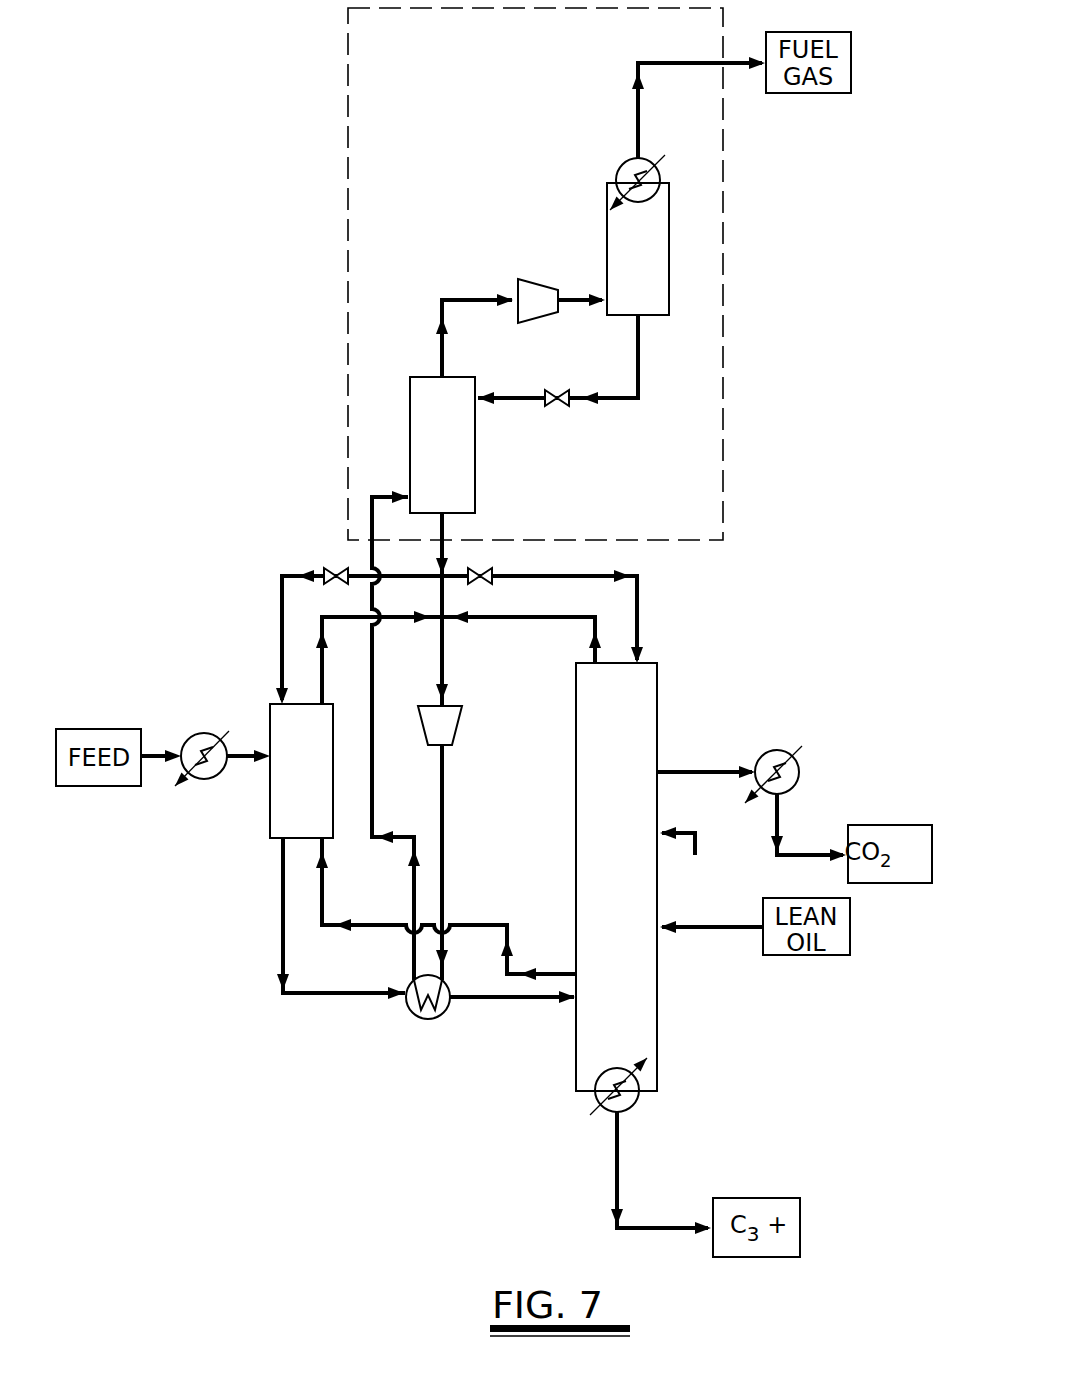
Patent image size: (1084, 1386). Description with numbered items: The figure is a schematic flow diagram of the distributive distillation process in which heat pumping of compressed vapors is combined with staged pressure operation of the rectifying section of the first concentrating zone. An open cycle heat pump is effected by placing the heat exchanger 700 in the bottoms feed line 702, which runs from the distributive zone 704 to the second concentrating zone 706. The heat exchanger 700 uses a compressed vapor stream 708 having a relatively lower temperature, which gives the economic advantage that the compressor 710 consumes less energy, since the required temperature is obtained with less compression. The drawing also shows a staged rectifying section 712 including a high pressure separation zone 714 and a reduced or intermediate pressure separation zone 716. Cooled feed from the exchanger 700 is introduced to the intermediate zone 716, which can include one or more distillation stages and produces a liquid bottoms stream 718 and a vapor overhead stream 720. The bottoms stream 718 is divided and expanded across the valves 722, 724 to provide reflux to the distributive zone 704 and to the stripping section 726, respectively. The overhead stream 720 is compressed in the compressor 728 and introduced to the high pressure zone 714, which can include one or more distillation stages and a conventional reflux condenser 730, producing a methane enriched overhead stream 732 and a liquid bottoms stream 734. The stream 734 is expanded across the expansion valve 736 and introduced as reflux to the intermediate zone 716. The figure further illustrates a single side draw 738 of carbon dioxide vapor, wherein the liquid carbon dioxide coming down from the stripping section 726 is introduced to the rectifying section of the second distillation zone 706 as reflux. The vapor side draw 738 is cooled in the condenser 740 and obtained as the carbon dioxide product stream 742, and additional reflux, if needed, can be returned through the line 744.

The heat exchanger 700 is at (407, 1007).
The bottoms feed line 702 is at (312, 995).
The distributive zone 704 is at (286, 727).
The second concentrating zone 706 is at (623, 998).
The compressed vapor stream 708 is at (443, 812).
The compressor 710 is at (443, 722).
The staged rectifying section 712 is at (348, 378).
The high pressure separation zone 714 is at (665, 247).
The intermediate pressure separation zone 716 is at (457, 468).
The liquid bottoms stream 718 is at (445, 530).
The vapor overhead stream 720 is at (468, 298).
The valve 722 is at (336, 568).
The valve 724 is at (490, 582).
The stripping section 726 is at (634, 712).
The compressor 728 is at (543, 282).
The reflux condenser 730 is at (620, 167).
The methane enriched overhead stream 732 is at (680, 63).
The liquid bottoms stream 734 is at (640, 358).
The expansion valve 736 is at (563, 406).
The side draw 738 is at (688, 768).
The condenser 740 is at (800, 767).
The CO2 product stream 742 is at (805, 853).
The reflux line 744 is at (687, 838).